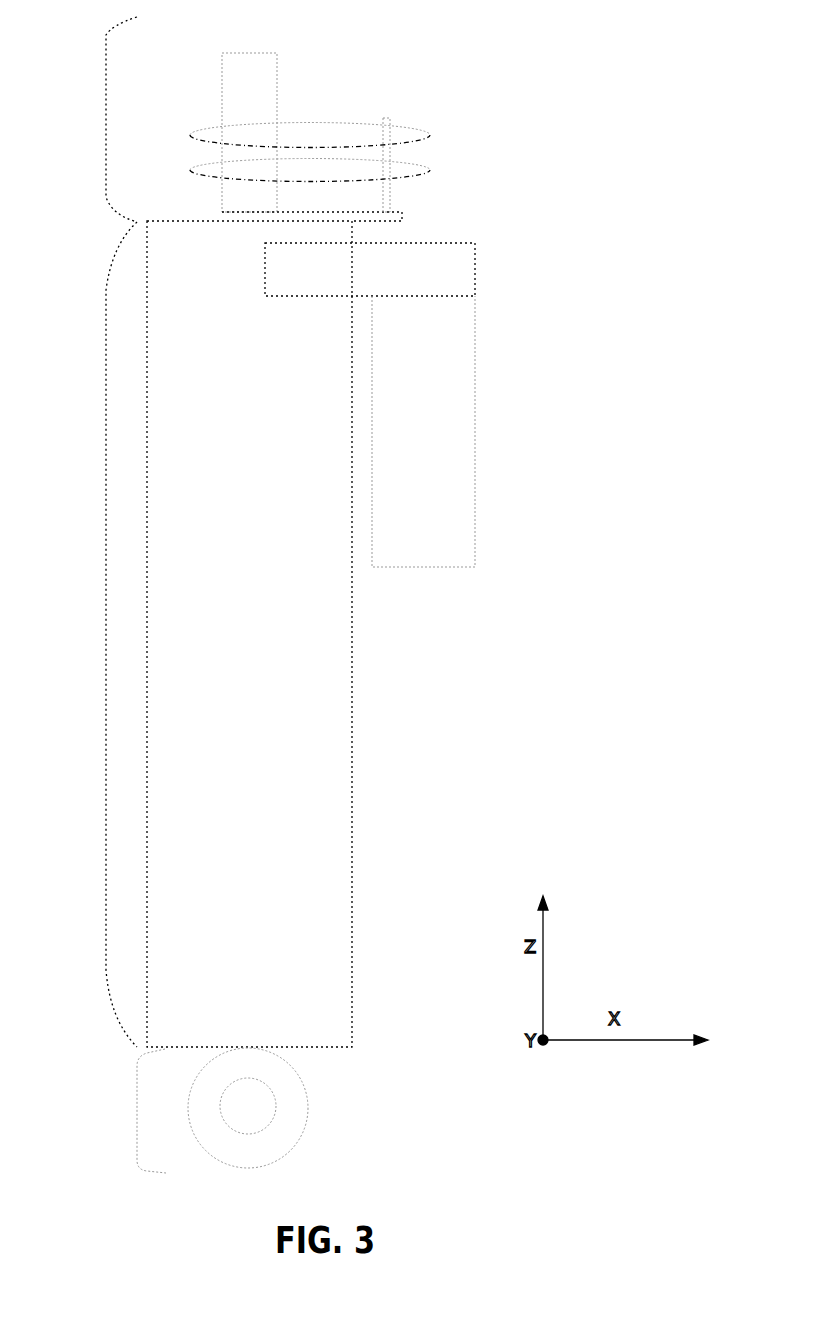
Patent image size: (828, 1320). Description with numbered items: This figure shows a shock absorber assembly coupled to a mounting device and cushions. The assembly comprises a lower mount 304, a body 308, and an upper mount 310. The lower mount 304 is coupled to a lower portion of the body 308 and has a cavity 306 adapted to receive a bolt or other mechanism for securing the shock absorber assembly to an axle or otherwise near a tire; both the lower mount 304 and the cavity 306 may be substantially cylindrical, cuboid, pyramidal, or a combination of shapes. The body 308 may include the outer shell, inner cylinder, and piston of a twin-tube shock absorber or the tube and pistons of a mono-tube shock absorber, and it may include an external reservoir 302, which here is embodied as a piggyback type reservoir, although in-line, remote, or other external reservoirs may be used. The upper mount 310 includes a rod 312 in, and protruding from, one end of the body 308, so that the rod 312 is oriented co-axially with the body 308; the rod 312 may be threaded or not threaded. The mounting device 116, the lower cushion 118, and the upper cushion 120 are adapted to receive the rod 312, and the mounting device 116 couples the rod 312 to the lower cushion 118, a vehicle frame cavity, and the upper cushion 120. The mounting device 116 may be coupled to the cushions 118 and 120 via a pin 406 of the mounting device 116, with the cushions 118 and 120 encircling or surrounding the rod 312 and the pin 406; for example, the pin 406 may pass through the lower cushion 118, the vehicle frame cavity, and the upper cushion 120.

The mounting device 116 is at (386, 213).
The lower cushion 118 is at (432, 169).
The upper cushion 120 is at (432, 138).
The external reservoir 302 is at (437, 360).
The lower mount 304 is at (137, 1110).
The cavity 306 is at (257, 1097).
The body 308 is at (106, 632).
The upper mount 310 is at (106, 119).
The rod 312 is at (258, 70).
The pin 406 is at (386, 118).